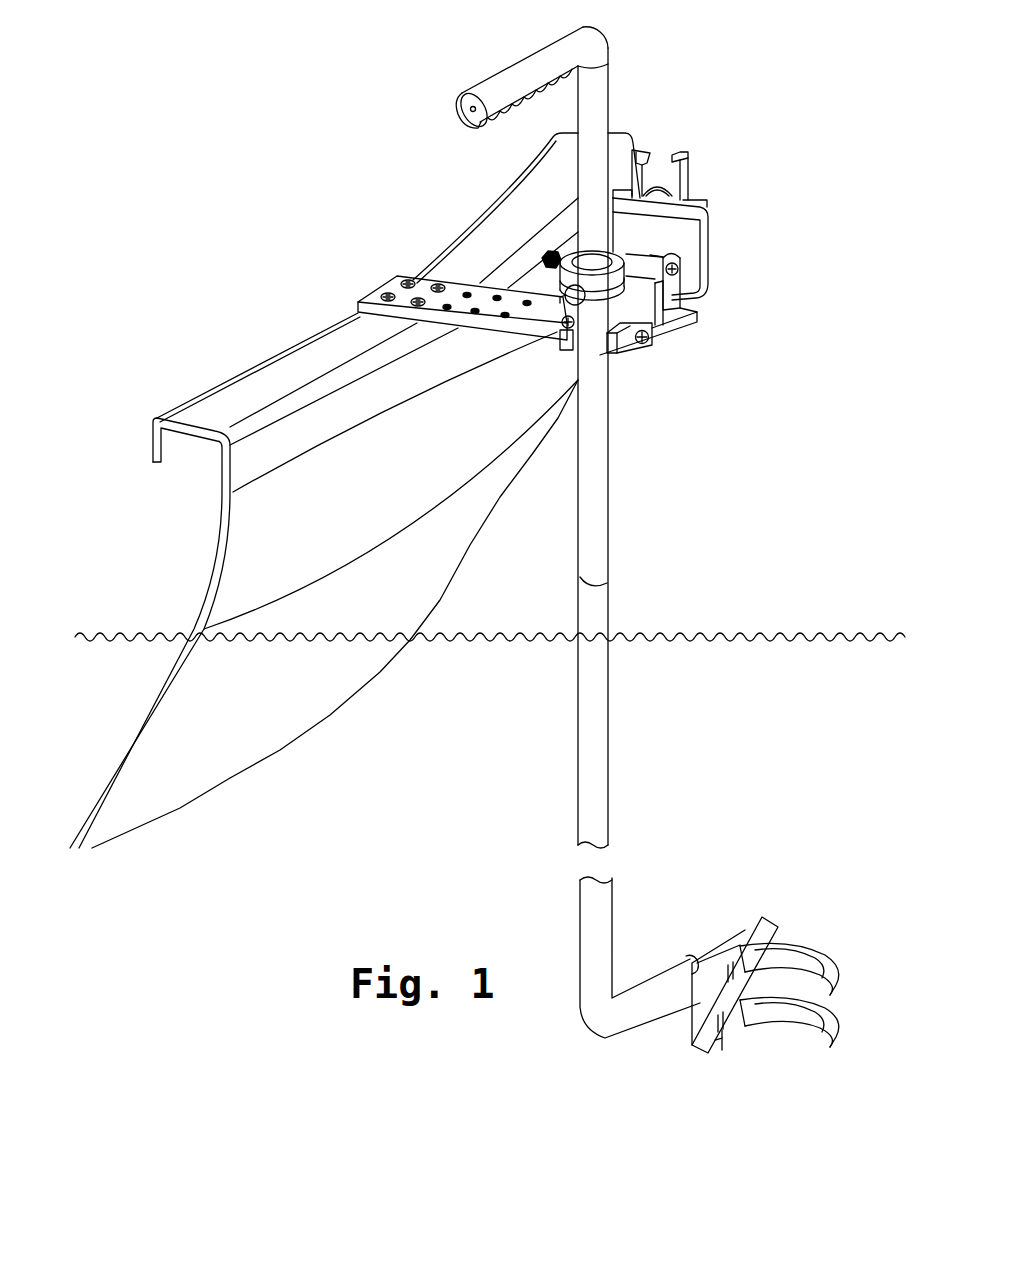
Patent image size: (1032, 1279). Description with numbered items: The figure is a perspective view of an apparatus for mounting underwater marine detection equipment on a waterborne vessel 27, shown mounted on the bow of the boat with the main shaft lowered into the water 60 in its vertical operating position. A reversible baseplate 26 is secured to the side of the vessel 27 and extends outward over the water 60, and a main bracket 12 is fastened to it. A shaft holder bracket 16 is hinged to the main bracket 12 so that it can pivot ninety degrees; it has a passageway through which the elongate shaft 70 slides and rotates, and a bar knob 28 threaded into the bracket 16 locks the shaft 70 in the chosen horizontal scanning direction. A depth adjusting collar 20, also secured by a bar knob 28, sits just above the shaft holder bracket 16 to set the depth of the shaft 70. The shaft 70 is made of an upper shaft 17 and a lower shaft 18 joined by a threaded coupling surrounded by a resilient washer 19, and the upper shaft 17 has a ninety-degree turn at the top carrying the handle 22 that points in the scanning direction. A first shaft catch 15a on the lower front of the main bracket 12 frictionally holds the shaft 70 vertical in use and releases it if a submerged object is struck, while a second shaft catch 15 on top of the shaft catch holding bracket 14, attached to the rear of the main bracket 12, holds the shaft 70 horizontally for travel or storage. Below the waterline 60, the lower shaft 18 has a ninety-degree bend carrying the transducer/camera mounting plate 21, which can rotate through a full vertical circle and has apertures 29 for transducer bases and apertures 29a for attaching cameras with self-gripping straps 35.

The main bracket 12 is at (672, 300).
The shaft catch holding bracket 14 is at (717, 257).
The second shaft catch 15 is at (702, 160).
The first shaft catch 15a is at (647, 353).
The shaft holder bracket 16 is at (687, 323).
The upper shaft 17 is at (617, 403).
The lower shaft 18 is at (615, 663).
The resilient washer 19 is at (612, 577).
The depth adjusting collar 20 is at (552, 258).
The transducer/camera mounting plate 21 is at (737, 1047).
The handle 22 is at (503, 62).
The baseplate 26 is at (370, 290).
The waterborne vessel 27 is at (257, 373).
The bar knob 28 is at (557, 287).
The apertures 29 is at (693, 1045).
The apertures 29a is at (733, 963).
The self-gripping straps 35 is at (837, 967).
The water 60 is at (762, 630).
The elongate shaft 70 is at (566, 534).